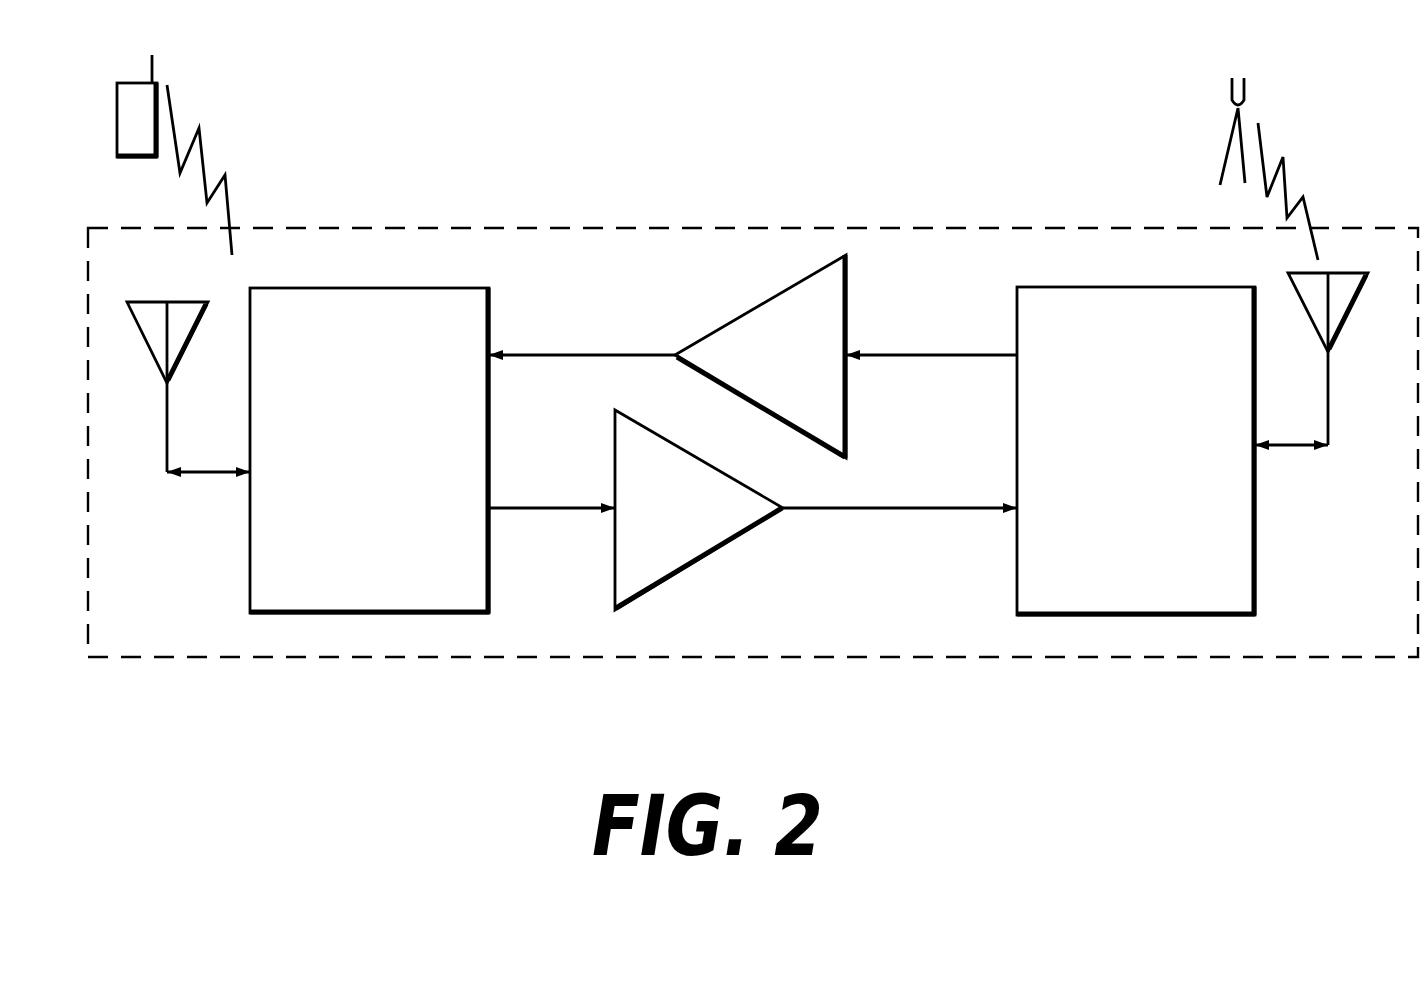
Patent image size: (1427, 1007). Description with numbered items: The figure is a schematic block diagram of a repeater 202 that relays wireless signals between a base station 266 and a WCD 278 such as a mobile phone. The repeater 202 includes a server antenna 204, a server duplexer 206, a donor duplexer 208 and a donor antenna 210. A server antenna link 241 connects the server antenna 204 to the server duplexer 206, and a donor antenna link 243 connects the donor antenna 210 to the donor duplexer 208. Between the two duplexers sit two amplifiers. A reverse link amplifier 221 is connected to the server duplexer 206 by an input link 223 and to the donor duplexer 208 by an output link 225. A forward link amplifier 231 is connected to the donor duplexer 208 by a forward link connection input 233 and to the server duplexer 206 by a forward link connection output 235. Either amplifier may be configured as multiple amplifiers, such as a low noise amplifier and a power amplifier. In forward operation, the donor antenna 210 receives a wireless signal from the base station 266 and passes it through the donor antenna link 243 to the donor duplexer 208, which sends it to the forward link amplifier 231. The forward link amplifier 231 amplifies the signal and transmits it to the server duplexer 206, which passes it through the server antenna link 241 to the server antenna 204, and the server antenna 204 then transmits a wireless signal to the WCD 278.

The repeater 202 is at (831, 663).
The server antenna 204 is at (167, 428).
The server duplexer 206 is at (388, 288).
The donor duplexer 208 is at (1120, 287).
The donor antenna 210 is at (1368, 395).
The reverse link amplifier 221 is at (712, 552).
The input link 223 is at (557, 505).
The output link 225 is at (848, 506).
The forward link amplifier 231 is at (770, 299).
The forward link connection input 233 is at (936, 353).
The forward link connection output 235 is at (567, 352).
The server antenna link 241 is at (226, 473).
The donor antenna link 243 is at (1284, 447).
The base station 266 is at (1225, 145).
The WCD 278 is at (147, 157).